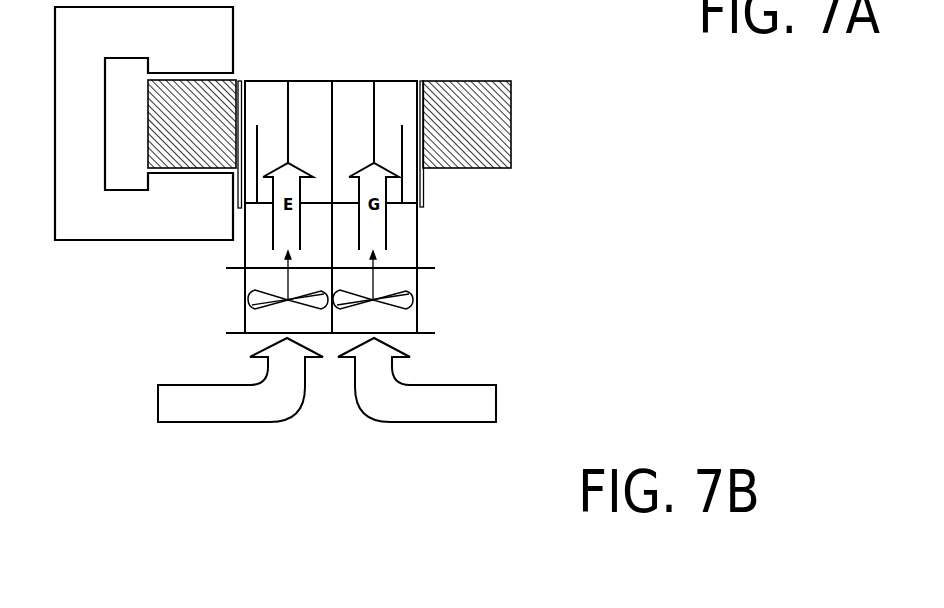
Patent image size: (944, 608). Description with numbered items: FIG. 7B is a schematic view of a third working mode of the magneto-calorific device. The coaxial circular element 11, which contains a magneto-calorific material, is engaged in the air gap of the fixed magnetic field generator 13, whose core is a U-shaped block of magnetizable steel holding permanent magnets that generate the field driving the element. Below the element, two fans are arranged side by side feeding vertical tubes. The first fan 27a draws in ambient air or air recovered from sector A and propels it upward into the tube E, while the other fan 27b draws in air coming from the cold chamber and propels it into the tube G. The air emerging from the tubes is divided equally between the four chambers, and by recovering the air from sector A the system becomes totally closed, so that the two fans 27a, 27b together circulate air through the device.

The coaxial circular element 11 is at (510, 138).
The fixed magnetic field generator 13 is at (97, 208).
The first fan 27a is at (252, 304).
The other fan 27b is at (413, 295).